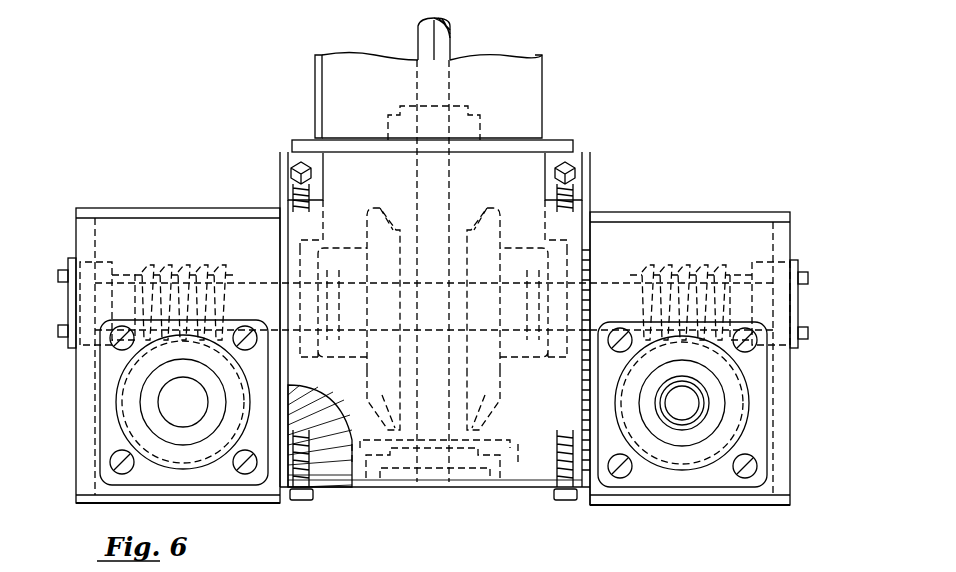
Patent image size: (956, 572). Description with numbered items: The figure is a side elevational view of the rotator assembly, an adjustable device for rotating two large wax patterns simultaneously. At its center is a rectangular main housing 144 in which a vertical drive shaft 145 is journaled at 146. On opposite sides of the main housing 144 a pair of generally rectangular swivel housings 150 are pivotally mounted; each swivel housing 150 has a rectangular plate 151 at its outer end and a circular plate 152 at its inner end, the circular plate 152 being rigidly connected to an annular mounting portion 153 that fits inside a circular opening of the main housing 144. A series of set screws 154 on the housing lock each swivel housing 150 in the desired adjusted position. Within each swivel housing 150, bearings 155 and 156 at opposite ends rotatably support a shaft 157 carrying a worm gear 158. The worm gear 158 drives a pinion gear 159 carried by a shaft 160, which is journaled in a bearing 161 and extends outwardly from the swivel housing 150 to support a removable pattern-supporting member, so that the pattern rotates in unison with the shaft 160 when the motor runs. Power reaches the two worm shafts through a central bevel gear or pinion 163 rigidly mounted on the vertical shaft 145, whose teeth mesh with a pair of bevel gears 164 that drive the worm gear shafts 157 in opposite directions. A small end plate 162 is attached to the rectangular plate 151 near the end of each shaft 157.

The main housing 144 is at (505, 488).
The vertical drive shaft 145 is at (418, 46).
The journal 146 is at (388, 135).
The swivel housing 150 is at (146, 208).
The rectangular plate 151 is at (78, 432).
The circular plate 152 is at (590, 212).
The annular mounting portion 153 is at (320, 408).
The set screw 154 is at (292, 162).
The bearing 155 is at (305, 240).
The bearing 156 is at (108, 266).
The shaft 157 is at (548, 268).
The worm gear 158 is at (226, 270).
The pinion gear 159 is at (208, 470).
The shaft 160 is at (160, 412).
The bearing 161 is at (120, 487).
The small end plate 162 is at (64, 285).
The central bevel gear 163 is at (478, 442).
The bevel gear 164 is at (397, 215).